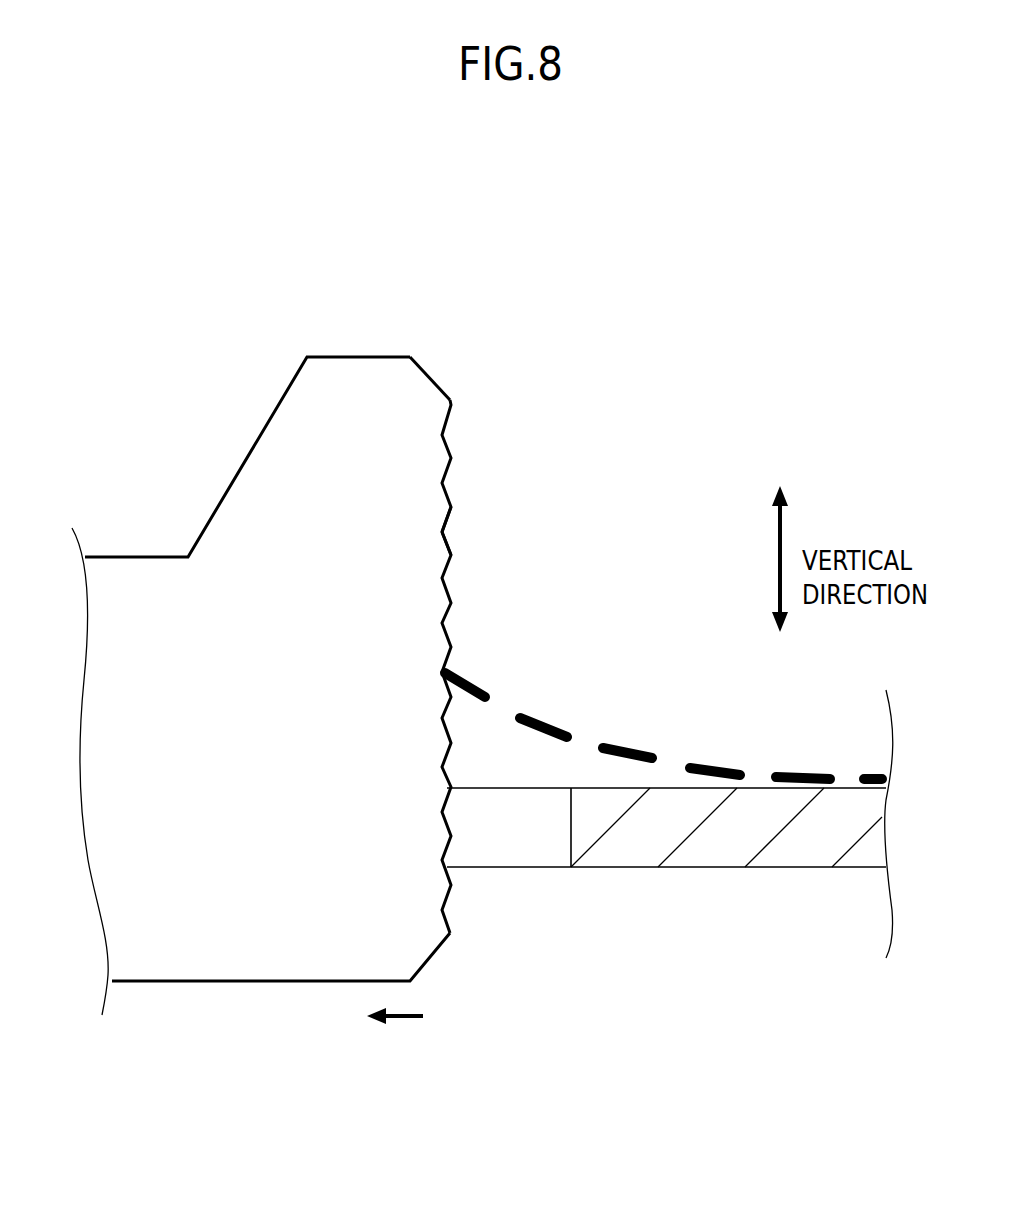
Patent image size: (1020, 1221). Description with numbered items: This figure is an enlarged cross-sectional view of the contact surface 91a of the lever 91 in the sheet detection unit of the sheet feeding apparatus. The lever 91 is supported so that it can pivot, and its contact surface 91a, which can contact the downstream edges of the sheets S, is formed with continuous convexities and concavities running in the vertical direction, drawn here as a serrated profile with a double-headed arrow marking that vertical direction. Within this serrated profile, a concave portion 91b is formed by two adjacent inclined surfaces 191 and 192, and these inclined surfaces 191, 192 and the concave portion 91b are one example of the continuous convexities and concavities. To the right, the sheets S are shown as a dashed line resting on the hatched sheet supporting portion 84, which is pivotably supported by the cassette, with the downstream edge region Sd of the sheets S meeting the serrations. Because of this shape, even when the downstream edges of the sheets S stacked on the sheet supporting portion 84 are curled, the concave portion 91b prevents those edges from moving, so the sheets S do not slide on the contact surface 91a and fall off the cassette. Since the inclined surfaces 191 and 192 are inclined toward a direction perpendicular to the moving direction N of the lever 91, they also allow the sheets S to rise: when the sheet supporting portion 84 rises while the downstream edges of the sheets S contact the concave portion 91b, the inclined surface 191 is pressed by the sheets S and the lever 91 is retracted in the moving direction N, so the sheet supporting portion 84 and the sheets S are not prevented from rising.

The lever 91 is at (143, 557).
The contact surface 91a is at (452, 405).
The concave portion 91b is at (443, 531).
The inclined surface 191 is at (447, 521).
The inclined surface 192 is at (447, 541).
The sheet supporting portion 84 is at (645, 853).
The sheets S is at (632, 747).
The sheet leading end Sd is at (443, 670).
The moving direction N is at (395, 1038).